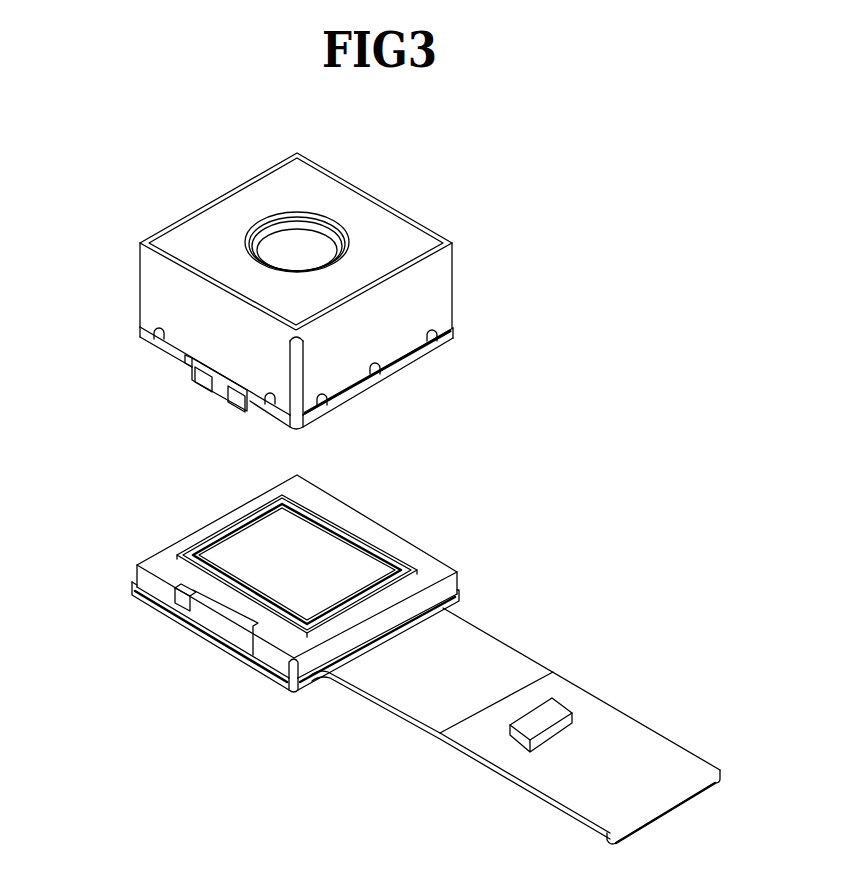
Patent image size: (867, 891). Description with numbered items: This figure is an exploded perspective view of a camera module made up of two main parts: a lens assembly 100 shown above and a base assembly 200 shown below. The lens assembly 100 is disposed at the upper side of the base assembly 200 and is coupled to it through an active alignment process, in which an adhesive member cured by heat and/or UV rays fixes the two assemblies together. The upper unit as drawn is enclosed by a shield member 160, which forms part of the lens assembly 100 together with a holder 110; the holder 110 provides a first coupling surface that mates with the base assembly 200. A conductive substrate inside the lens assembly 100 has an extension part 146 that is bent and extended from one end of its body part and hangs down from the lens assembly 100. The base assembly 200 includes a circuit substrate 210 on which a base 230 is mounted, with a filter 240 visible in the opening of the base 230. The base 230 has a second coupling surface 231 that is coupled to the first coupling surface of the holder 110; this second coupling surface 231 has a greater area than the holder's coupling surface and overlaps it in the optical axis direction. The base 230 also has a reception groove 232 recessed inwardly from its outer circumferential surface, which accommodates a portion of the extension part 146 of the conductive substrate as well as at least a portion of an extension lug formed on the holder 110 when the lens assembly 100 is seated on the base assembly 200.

The lens assembly 100 is at (326, 285).
The holder 110 is at (378, 377).
The extension part 146 is at (221, 387).
The shield member 160 is at (216, 214).
The base assembly 200 is at (383, 646).
The circuit substrate 210 is at (227, 650).
The base 230 is at (296, 576).
The second coupling surface 231 is at (452, 565).
The reception groove 232 is at (218, 627).
The filter 240 is at (243, 557).